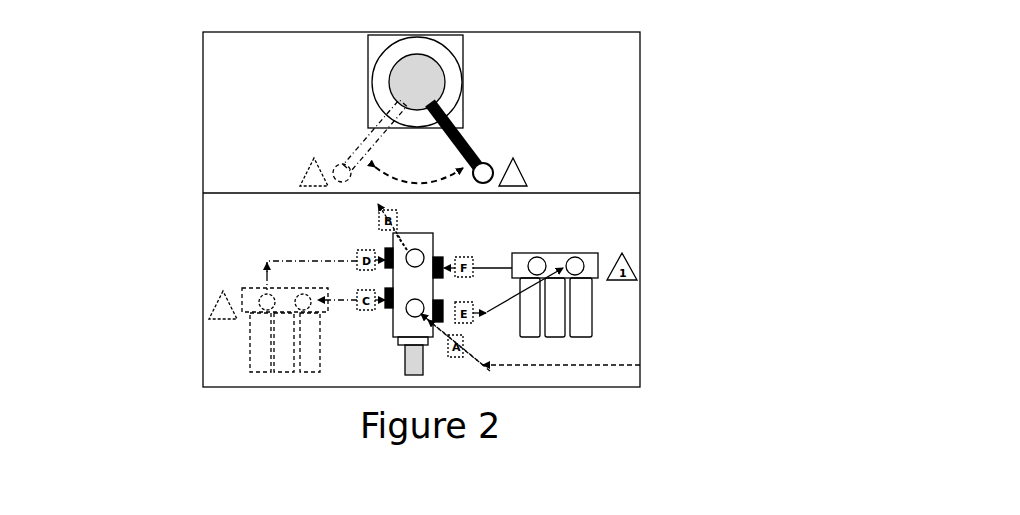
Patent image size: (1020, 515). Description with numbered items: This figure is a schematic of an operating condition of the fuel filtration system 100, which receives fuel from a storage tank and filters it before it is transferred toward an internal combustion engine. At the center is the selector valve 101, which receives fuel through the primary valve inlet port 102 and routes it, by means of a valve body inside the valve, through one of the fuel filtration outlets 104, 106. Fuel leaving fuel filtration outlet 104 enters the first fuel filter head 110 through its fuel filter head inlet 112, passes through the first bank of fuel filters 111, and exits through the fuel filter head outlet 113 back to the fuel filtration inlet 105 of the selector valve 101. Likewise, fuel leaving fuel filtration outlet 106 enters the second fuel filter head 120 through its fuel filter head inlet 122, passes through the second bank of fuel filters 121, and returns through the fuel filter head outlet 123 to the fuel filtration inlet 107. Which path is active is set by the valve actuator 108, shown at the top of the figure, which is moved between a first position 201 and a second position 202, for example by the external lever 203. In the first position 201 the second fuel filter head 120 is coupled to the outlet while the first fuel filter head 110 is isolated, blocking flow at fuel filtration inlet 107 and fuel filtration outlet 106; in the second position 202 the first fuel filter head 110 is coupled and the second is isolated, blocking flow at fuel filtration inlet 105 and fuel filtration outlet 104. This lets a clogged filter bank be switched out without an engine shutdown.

The fuel filtration system 100 is at (585, 218).
The selector valve 101 is at (450, 36).
The primary valve inlet port 102 is at (485, 367).
The fuel filtration outlet 104 is at (386, 306).
The fuel filtration inlet 105 is at (389, 252).
The fuel filtration outlet 106 is at (443, 305).
The fuel filtration inlet 107 is at (440, 254).
The valve actuator 108 is at (425, 78).
The first fuel filter head 110 is at (243, 298).
The first bank of fuel filters 111 is at (307, 338).
The fuel filter head inlet 112 is at (303, 305).
The fuel filter head outlet 113 is at (264, 300).
The second fuel filter head 120 is at (598, 253).
The second bank of fuel filters 121 is at (530, 298).
The fuel filter head inlet 122 is at (598, 262).
The fuel filter head outlet 123 is at (540, 263).
The first position 201 is at (525, 176).
The second position 202 is at (305, 175).
The external lever 203 is at (365, 138).